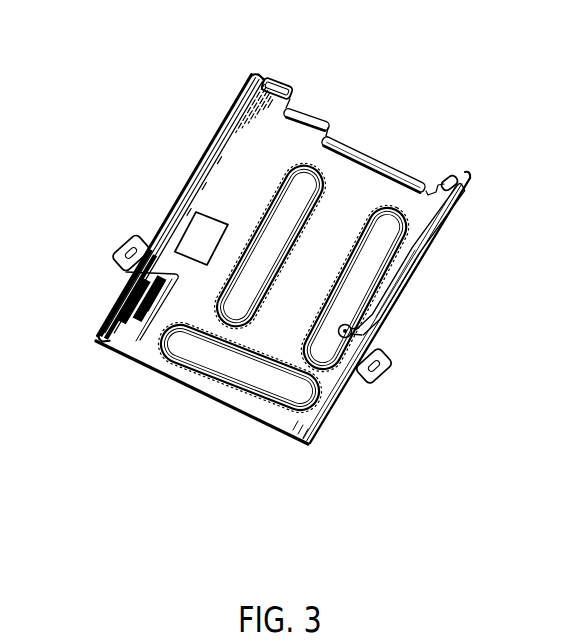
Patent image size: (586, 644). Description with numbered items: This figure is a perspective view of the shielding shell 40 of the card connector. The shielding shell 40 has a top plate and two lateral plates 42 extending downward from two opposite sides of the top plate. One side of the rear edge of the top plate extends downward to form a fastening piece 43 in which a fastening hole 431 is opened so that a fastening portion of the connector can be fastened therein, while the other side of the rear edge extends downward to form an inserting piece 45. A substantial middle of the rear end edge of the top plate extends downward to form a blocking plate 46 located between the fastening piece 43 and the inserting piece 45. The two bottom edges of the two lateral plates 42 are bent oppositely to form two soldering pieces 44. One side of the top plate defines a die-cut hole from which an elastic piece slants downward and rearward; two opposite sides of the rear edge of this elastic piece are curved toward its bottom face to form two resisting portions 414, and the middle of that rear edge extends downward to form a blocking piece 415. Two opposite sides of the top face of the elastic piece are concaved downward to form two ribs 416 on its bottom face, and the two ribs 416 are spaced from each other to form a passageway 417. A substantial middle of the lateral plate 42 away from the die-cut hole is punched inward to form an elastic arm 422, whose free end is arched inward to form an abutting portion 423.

The shielding shell 40 is at (153, 76).
The lateral plates 42 is at (284, 287).
The fastening piece 43 is at (293, 95).
The fastening hole 431 is at (277, 79).
The soldering pieces 44 is at (118, 238).
The inserting piece 45 is at (456, 178).
The blocking plate 46 is at (388, 163).
The resisting portions 414 is at (127, 272).
The blocking piece 415 is at (167, 233).
The ribs 416 is at (100, 343).
The passageway 417 is at (120, 338).
The elastic arm 422 is at (377, 304).
The abutting portion 423 is at (352, 337).